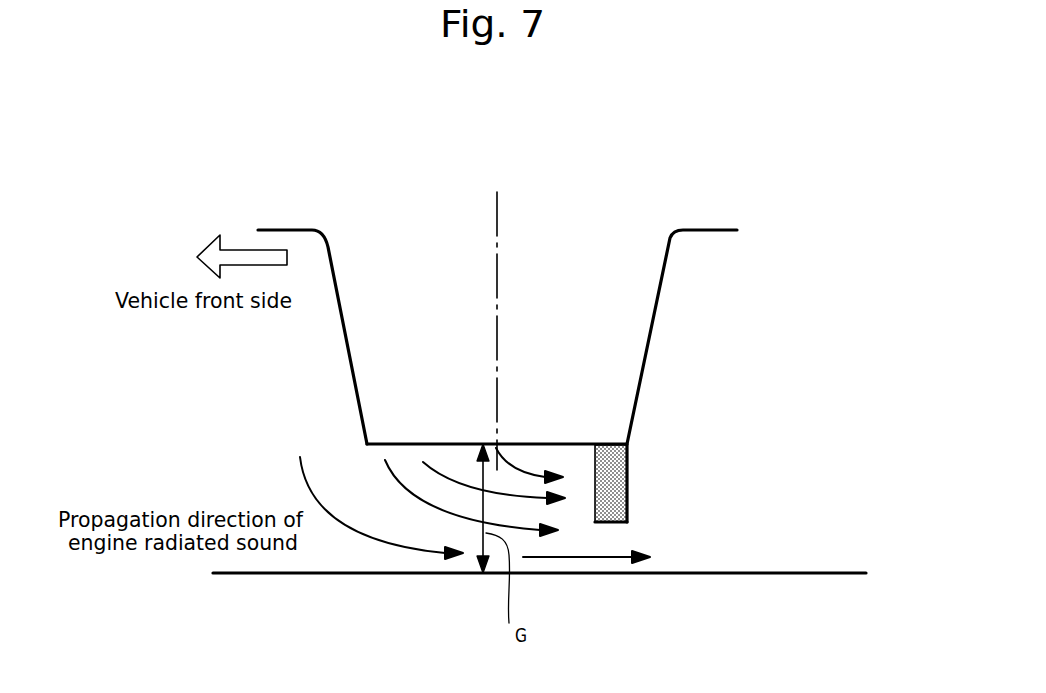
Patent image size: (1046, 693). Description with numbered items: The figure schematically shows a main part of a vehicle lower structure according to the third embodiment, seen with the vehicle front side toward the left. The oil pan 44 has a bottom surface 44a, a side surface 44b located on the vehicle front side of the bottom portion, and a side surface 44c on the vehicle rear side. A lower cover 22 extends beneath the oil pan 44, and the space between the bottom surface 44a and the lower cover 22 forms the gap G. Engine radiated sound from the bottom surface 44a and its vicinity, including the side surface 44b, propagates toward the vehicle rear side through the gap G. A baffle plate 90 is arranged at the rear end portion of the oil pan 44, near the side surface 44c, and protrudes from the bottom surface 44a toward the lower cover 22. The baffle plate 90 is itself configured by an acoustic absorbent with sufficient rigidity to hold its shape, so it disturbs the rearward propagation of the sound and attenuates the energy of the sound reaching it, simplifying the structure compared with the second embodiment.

The oil pan 44 is at (498, 292).
The bottom surface 44a is at (433, 446).
The side surface 44b is at (348, 345).
The side surface 44c is at (652, 342).
The baffle plate 90 is at (627, 475).
The lower cover 22 is at (785, 571).